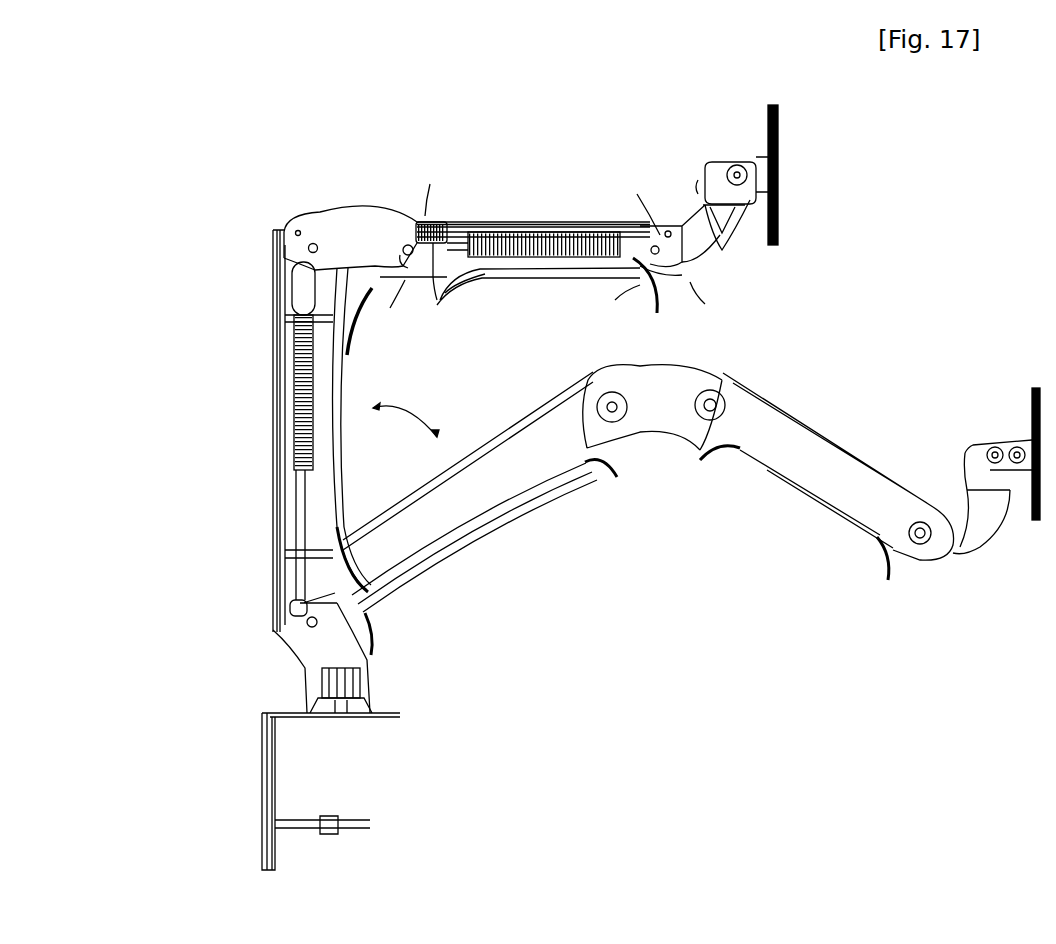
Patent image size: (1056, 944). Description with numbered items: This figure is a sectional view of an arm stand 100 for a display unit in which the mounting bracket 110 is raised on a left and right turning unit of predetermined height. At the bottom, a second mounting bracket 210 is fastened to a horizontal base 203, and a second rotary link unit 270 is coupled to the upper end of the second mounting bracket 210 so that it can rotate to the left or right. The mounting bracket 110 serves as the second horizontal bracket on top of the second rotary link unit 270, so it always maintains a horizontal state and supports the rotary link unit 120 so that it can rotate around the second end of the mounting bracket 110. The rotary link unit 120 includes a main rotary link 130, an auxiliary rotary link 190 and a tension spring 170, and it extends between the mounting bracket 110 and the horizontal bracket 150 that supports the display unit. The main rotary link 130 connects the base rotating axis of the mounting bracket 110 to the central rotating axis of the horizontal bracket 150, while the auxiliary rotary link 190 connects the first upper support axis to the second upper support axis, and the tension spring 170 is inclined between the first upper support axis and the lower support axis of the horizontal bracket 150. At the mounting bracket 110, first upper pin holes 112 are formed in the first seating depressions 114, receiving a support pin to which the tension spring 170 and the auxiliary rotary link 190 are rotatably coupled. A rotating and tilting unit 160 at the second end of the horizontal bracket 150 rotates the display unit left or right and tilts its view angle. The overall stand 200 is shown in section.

The arm stand 100 is at (534, 118).
The mounting bracket 110 is at (357, 220).
The first upper pin holes 112 is at (438, 230).
The first seating depression 114 is at (433, 262).
The rotary link unit 120 is at (553, 222).
The main rotary link 130 is at (498, 222).
The horizontal bracket 150 is at (693, 224).
The rotating and tilting unit 160 is at (718, 154).
The tension spring 170 is at (553, 280).
The auxiliary rotary link 190 is at (596, 235).
The monitor arm stand 200 is at (196, 245).
The horizontal base 203 is at (260, 775).
The second mounting bracket 210 is at (330, 645).
The second rotary link unit 270 is at (263, 412).